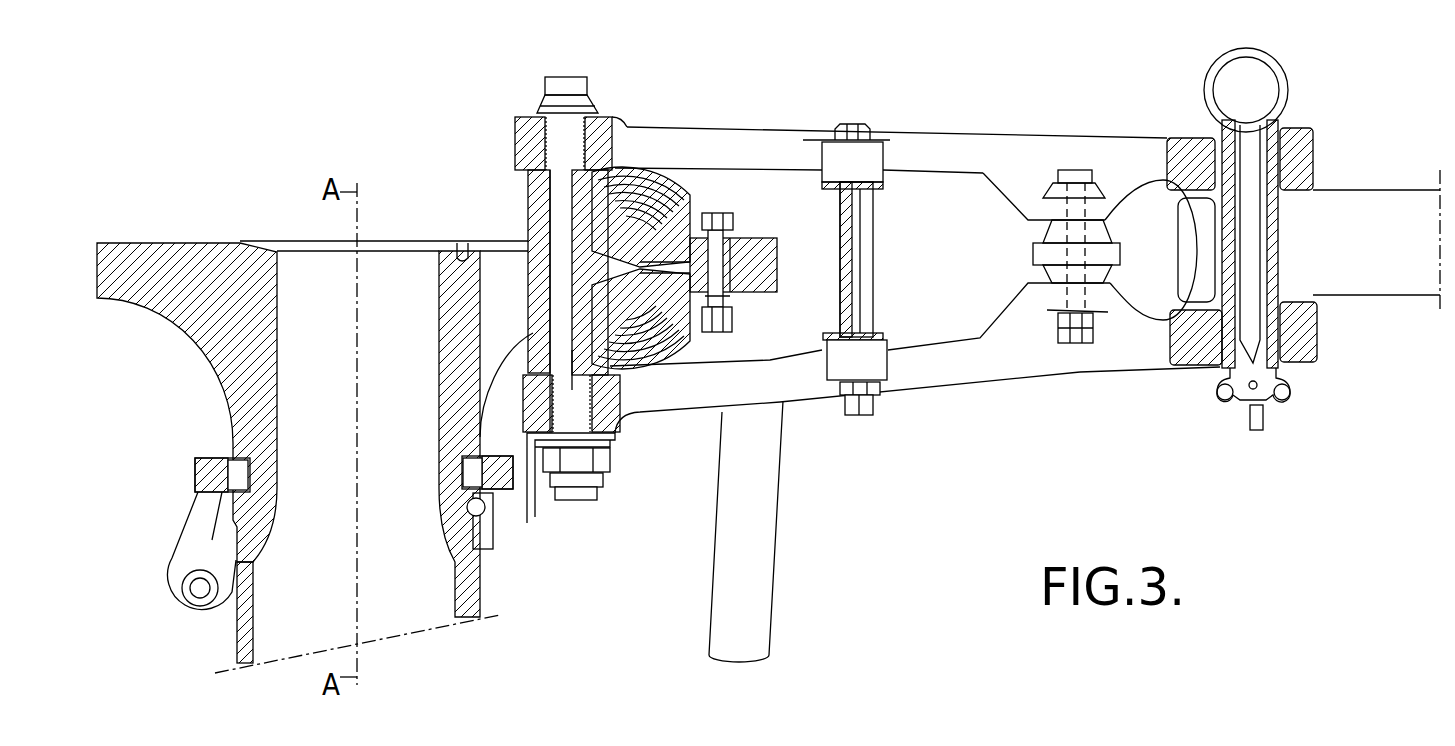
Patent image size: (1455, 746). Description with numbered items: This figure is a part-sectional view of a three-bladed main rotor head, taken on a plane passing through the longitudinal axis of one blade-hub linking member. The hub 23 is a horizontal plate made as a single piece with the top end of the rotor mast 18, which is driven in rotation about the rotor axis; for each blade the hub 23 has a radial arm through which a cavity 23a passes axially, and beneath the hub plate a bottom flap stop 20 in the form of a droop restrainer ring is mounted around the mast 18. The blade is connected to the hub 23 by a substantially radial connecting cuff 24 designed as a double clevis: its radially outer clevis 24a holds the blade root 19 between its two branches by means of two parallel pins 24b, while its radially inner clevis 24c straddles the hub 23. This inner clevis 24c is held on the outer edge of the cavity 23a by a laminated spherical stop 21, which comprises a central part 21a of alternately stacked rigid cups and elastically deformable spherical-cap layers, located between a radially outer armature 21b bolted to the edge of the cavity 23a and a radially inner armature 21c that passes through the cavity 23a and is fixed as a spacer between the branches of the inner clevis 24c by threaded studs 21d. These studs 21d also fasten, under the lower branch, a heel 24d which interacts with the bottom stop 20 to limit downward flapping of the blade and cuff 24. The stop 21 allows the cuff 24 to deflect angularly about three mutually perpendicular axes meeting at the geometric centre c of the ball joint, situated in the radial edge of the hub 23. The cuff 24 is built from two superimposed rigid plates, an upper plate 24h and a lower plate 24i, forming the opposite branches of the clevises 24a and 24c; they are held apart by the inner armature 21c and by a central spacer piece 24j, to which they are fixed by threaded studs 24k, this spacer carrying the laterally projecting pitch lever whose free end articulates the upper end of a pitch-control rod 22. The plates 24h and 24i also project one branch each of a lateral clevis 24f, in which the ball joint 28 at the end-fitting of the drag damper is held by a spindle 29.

The rotor mast 18 is at (247, 630).
The blade root 19 is at (1378, 210).
The bottom flap stop 20 is at (198, 480).
The laminated spherical stop 21 is at (650, 165).
The central part 21a is at (663, 190).
The radially outer armature 21b is at (662, 300).
The radially inner armature 21c is at (533, 223).
The threaded studs 21d is at (553, 87).
The pitch-control rod 22 is at (755, 548).
The hub 23 is at (153, 273).
The cavity 23a is at (505, 302).
The connecting cuff 24 is at (928, 130).
The radially outer clevis 24a is at (1190, 147).
The pins 24b is at (1270, 270).
The radially inner clevis 24c is at (625, 142).
The heel 24d is at (555, 488).
The lateral clevis 24f is at (1115, 203).
The upper plate 24h is at (1002, 158).
The lower plate 24i is at (983, 368).
The central spacer piece 24j is at (862, 300).
The threaded studs 24k is at (872, 402).
The ball joint 28 is at (1040, 253).
The spindle 29 is at (1048, 350).
The geometric centre c is at (752, 267).